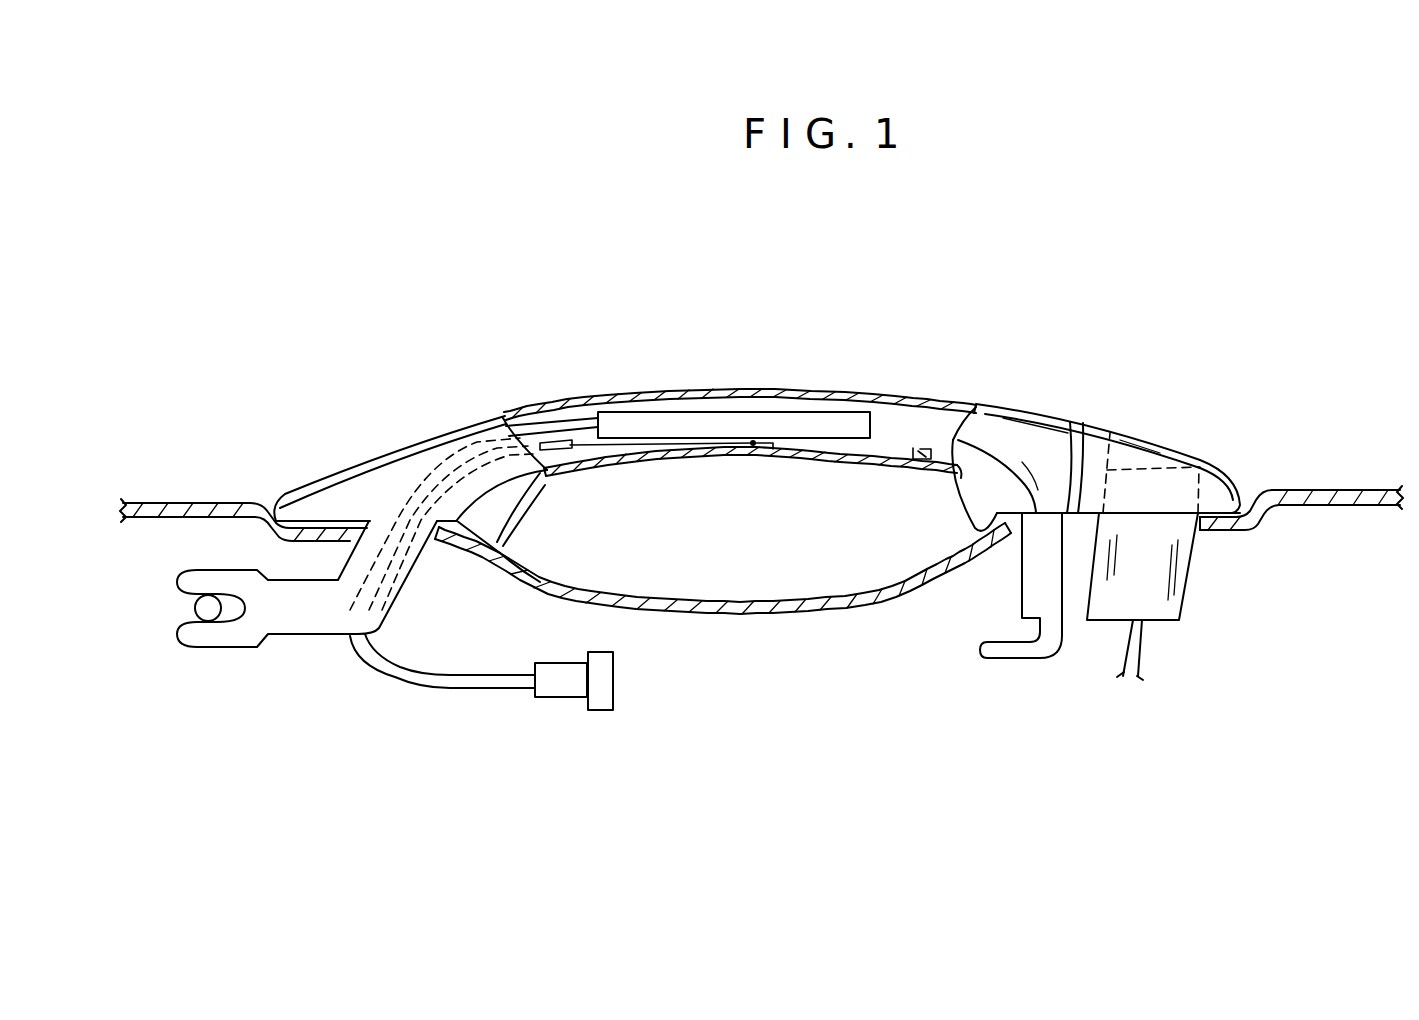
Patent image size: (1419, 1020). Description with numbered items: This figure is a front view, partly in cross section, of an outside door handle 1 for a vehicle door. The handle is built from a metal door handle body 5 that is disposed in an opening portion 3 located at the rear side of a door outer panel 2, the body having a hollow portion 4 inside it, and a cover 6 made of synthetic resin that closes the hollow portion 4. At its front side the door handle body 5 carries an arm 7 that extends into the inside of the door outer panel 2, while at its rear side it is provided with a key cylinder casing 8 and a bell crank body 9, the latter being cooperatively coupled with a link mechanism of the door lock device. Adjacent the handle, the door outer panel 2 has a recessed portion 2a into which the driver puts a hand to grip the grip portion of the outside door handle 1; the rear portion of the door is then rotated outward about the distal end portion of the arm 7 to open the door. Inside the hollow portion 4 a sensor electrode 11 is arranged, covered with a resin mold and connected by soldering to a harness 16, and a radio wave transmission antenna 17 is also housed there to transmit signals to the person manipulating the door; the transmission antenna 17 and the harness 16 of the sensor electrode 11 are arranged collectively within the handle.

The outside door handle 1 is at (865, 350).
The door outer panel 2 is at (1337, 490).
The recessed portion 2a is at (768, 618).
The opening portion 3 is at (1205, 545).
The hollow portion 4 is at (926, 432).
The door handle body 5 is at (691, 476).
The cover 6 is at (781, 394).
The arm 7 is at (292, 636).
The key cylinder casing 8 is at (1158, 607).
The bell crank body 9 is at (1023, 572).
The sensor electrode 11 is at (840, 478).
The harness 16 is at (443, 689).
The radio wave transmission antenna 17 is at (683, 425).